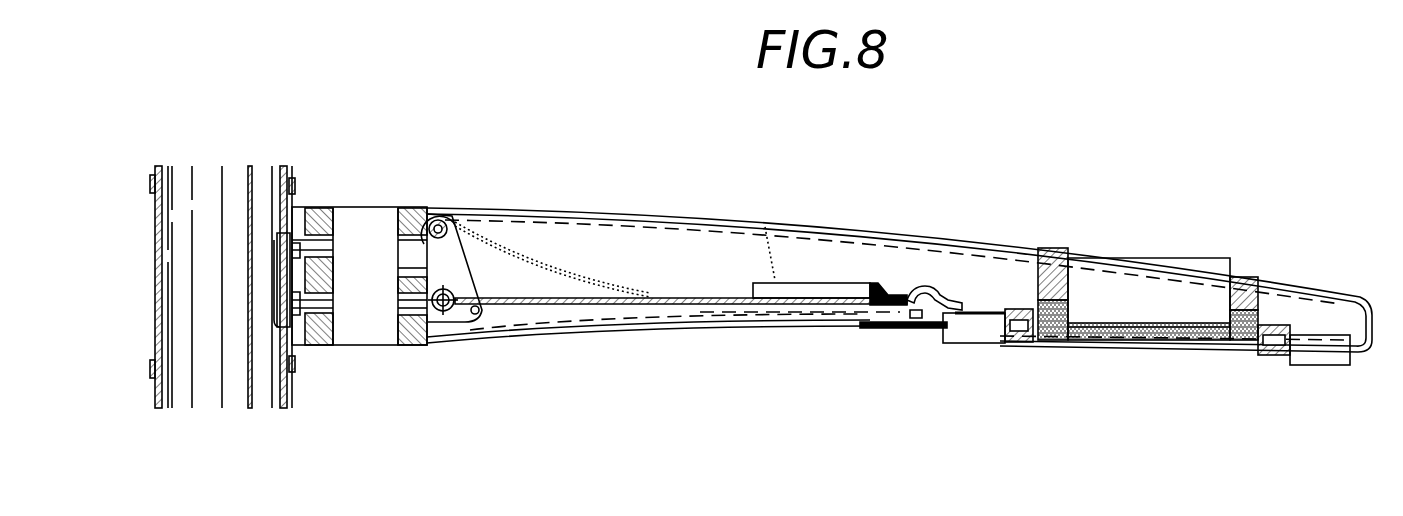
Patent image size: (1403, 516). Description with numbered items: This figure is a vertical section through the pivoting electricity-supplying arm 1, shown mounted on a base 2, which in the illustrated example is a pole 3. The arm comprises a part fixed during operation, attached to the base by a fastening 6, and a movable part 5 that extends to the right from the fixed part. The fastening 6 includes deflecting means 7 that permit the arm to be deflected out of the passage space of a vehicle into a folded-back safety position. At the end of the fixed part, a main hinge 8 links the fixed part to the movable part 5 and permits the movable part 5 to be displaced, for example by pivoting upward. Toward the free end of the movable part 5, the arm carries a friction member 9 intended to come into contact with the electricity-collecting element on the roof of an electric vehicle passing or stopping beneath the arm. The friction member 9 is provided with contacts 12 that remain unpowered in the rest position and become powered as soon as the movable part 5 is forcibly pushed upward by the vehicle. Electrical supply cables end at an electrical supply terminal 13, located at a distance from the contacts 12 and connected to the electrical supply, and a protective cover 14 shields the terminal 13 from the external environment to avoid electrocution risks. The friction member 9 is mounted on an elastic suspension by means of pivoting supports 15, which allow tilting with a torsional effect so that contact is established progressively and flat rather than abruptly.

The pivoting electricity-supplying arm 1 is at (1124, 153).
The base 2 is at (311, 383).
The pole 3 is at (318, 383).
The movable part 5 is at (716, 186).
The fastening 6 is at (392, 183).
The deflecting means 7 is at (370, 232).
The main hinge 8 is at (442, 229).
The friction member 9 is at (967, 345).
The contacts 12 is at (872, 330).
The electrical supply terminal 13 is at (913, 303).
The protective cover 14 is at (828, 226).
The pivoting support 15 is at (1013, 345).